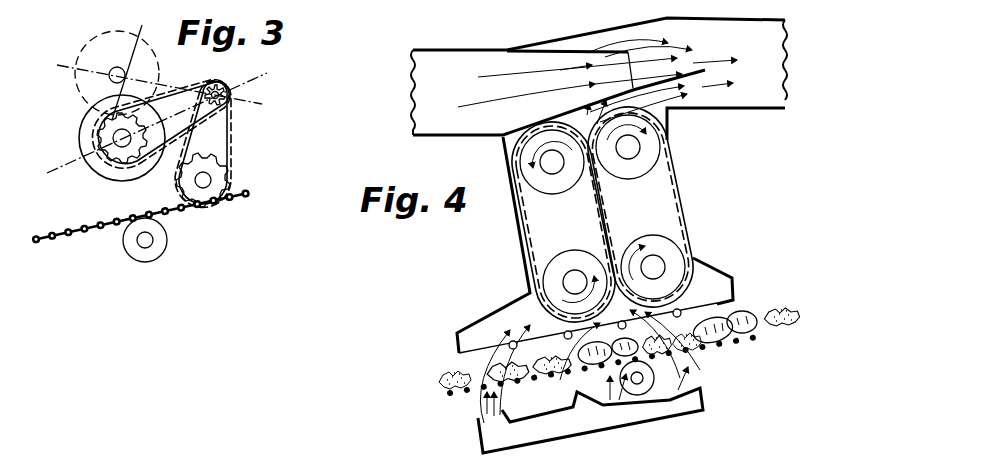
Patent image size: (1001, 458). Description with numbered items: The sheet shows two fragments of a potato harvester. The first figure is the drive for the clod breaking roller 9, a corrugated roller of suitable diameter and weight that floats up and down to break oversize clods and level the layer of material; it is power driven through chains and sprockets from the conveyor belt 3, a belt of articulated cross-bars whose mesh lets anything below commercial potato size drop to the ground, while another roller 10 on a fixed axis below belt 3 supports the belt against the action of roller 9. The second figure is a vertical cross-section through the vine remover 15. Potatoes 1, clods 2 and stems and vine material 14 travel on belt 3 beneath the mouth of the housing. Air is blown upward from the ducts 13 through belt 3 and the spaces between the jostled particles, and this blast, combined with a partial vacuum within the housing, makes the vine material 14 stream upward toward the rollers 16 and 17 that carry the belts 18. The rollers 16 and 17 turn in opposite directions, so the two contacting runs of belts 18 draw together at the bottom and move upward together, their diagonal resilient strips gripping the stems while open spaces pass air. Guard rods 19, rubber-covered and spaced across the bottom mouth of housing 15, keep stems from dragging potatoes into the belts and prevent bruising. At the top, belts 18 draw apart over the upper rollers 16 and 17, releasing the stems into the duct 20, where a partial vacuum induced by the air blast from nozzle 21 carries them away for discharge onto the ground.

In FIG. 4, the potatoes 1 is at (740, 333).
In FIG. 4, the clods 2 is at (458, 402).
In FIG. 3, the conveyor belt 3 is at (78, 240).
In FIG. 3, the clod breaking roller 9 is at (97, 170).
In FIG. 3, the roller 10 is at (167, 250).
In FIG. 4, the ducts 13 is at (503, 410).
In FIG. 4, the vine material 14 is at (688, 73).
In FIG. 4, the vine remover 15 is at (520, 243).
In FIG. 4, the rollers 16 is at (527, 163).
In FIG. 4, the rollers 17 is at (655, 153).
In FIG. 4, the belts 18 is at (517, 213).
In FIG. 4, the guard rods 19 is at (511, 341).
In FIG. 4, the duct 20 is at (730, 110).
In FIG. 4, the nozzle 21 is at (585, 47).